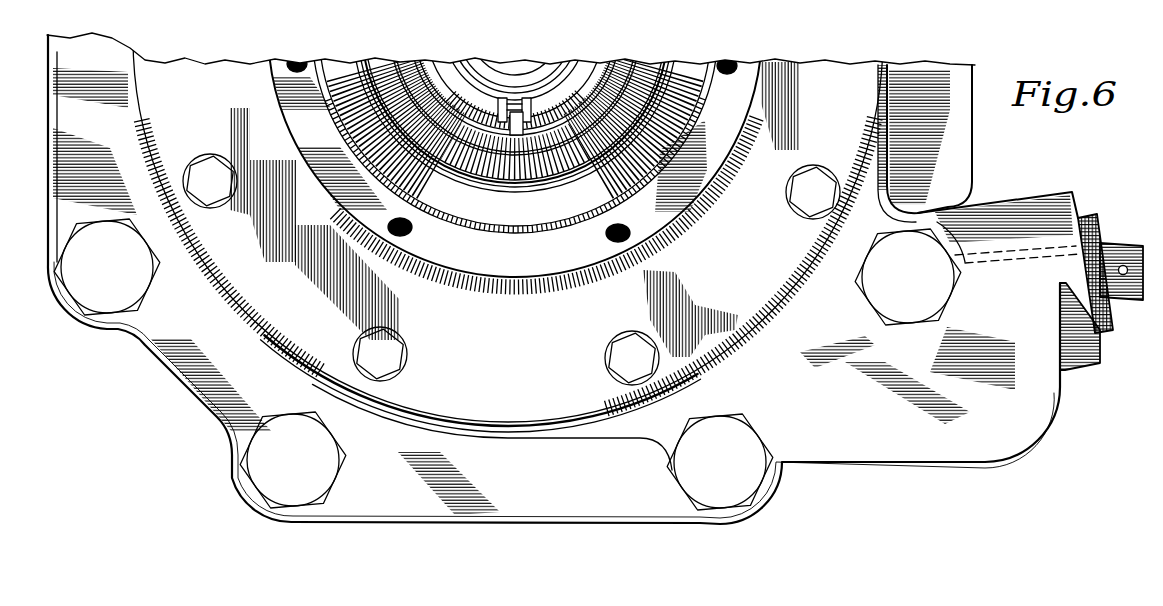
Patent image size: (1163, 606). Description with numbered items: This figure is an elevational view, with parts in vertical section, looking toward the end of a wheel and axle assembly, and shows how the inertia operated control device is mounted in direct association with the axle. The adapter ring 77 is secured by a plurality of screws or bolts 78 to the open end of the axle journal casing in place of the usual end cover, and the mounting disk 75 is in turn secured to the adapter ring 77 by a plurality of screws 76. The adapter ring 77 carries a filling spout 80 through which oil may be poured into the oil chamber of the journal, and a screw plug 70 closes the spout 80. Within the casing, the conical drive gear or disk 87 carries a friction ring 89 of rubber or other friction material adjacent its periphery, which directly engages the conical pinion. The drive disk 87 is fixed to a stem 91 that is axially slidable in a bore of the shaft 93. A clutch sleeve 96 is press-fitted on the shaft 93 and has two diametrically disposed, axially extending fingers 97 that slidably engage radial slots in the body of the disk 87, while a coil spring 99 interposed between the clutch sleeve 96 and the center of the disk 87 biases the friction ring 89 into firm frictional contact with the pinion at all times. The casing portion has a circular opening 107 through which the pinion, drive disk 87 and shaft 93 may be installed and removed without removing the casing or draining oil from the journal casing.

The screw plug 70 is at (1094, 222).
The mounting disk 75 is at (237, 70).
The screws 76 is at (215, 197).
The adapter ring 77 is at (521, 513).
The screws or bolts 78 is at (137, 285).
The filling spout 80 is at (1025, 206).
The conical drive gear or disk 87 is at (413, 76).
The friction ring 89 is at (367, 73).
The stem 91 is at (527, 68).
The shaft 93 is at (535, 72).
The clutch sleeve 96 is at (505, 68).
The fingers 97 is at (516, 112).
The coil spring 99 is at (485, 70).
The circular opening 107 is at (321, 70).